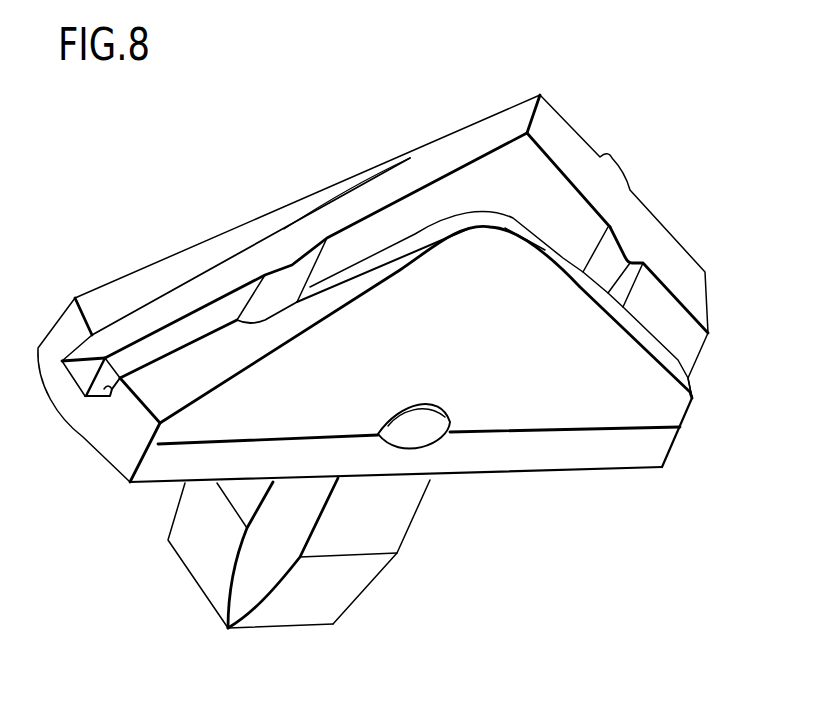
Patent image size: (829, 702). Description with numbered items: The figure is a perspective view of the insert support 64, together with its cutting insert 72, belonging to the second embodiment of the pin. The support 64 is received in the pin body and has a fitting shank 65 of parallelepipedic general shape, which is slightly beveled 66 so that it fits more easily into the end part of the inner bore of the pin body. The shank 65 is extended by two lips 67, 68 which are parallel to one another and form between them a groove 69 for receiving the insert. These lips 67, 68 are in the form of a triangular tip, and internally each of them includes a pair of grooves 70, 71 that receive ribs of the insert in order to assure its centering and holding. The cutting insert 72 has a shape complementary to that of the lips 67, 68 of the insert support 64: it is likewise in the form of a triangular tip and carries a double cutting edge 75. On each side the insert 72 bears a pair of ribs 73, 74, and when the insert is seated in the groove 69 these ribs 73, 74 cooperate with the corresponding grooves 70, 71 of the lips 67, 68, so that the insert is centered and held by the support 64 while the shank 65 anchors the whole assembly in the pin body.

The insert support 64 is at (574, 487).
The fitting shank 65 is at (393, 513).
The bevel 66 is at (348, 588).
The lip 67 is at (633, 400).
The lip 68 is at (120, 295).
The groove 69 is at (85, 398).
The groove 70 is at (296, 300).
The groove 71 is at (630, 263).
The cutting insert 72 is at (478, 177).
The rib 73 is at (245, 235).
The rib 74 is at (613, 155).
The double cutting edge 75 is at (548, 123).